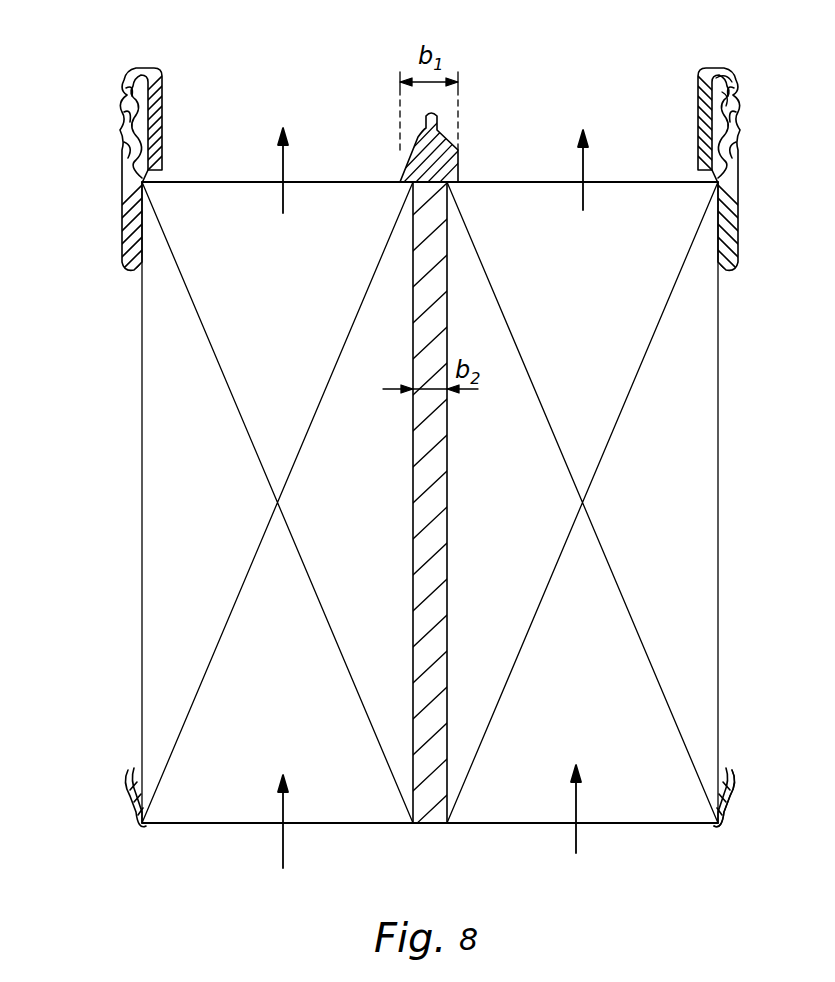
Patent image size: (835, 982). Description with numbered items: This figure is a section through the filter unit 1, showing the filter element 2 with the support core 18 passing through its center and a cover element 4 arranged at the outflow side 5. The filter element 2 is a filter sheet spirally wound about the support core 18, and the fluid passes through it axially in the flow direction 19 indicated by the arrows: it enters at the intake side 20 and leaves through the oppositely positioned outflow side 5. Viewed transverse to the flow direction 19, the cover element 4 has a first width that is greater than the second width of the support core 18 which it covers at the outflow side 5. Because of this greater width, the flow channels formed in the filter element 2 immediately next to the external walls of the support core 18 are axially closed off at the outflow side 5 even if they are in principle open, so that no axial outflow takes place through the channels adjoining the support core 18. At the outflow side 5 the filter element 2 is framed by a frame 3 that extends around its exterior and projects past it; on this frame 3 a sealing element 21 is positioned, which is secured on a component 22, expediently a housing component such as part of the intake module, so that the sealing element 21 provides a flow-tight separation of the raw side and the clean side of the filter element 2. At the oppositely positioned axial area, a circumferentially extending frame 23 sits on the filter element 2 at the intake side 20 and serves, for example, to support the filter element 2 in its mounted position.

The filter unit 1 is at (54, 68).
The filter element 2 is at (157, 466).
The frame 3 is at (718, 444).
The cover element 4 is at (435, 160).
The outflow side 5 is at (223, 178).
The support core 18 is at (435, 530).
The flow direction 19 is at (283, 846).
The intake side 20 is at (214, 830).
The sealing element 21 is at (720, 88).
The component 22 is at (697, 108).
The frame 23 is at (725, 810).